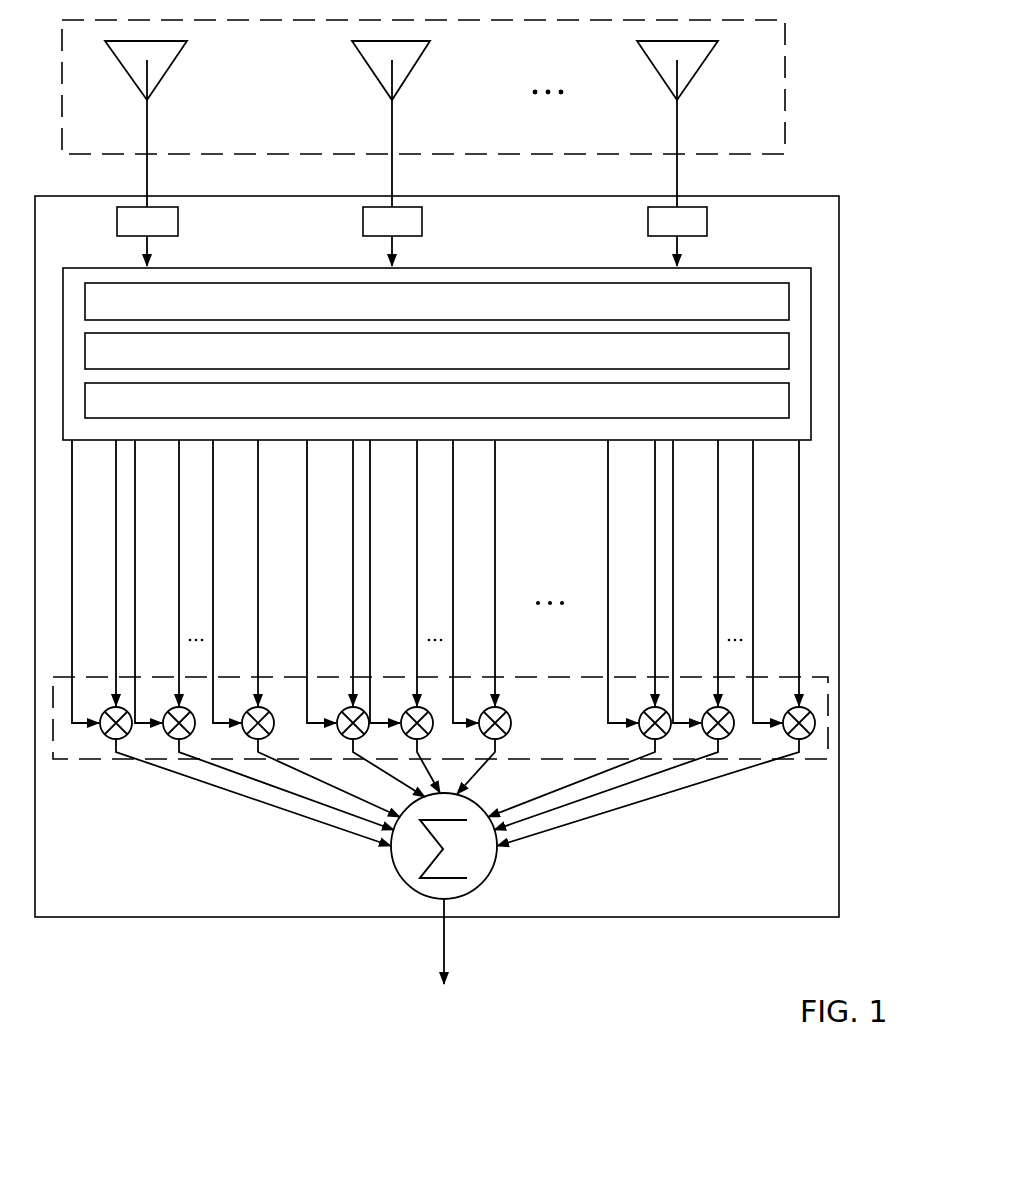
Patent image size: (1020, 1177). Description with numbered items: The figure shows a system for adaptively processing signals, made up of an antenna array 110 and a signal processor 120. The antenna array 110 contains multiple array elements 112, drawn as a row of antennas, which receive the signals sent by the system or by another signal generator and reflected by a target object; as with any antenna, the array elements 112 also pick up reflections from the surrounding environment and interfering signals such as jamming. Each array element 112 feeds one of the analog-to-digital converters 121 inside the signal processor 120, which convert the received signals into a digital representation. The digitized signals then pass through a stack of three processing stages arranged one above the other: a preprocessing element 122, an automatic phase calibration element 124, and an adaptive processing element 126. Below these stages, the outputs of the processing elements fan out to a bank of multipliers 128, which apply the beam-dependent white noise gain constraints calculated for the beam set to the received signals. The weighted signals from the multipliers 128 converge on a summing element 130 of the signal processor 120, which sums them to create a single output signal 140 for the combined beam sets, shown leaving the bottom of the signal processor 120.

The antenna array 110 is at (785, 85).
The array elements 112 is at (168, 72).
The signal processor 120 is at (800, 194).
The analog-to-digital converters 121 is at (178, 228).
The preprocessing element 122 is at (789, 292).
The automatic phase calibration element 124 is at (789, 342).
The adaptive processing element 126 is at (789, 392).
The multipliers 128 is at (828, 677).
The summing element 130 is at (497, 858).
The output signal 140 is at (445, 945).